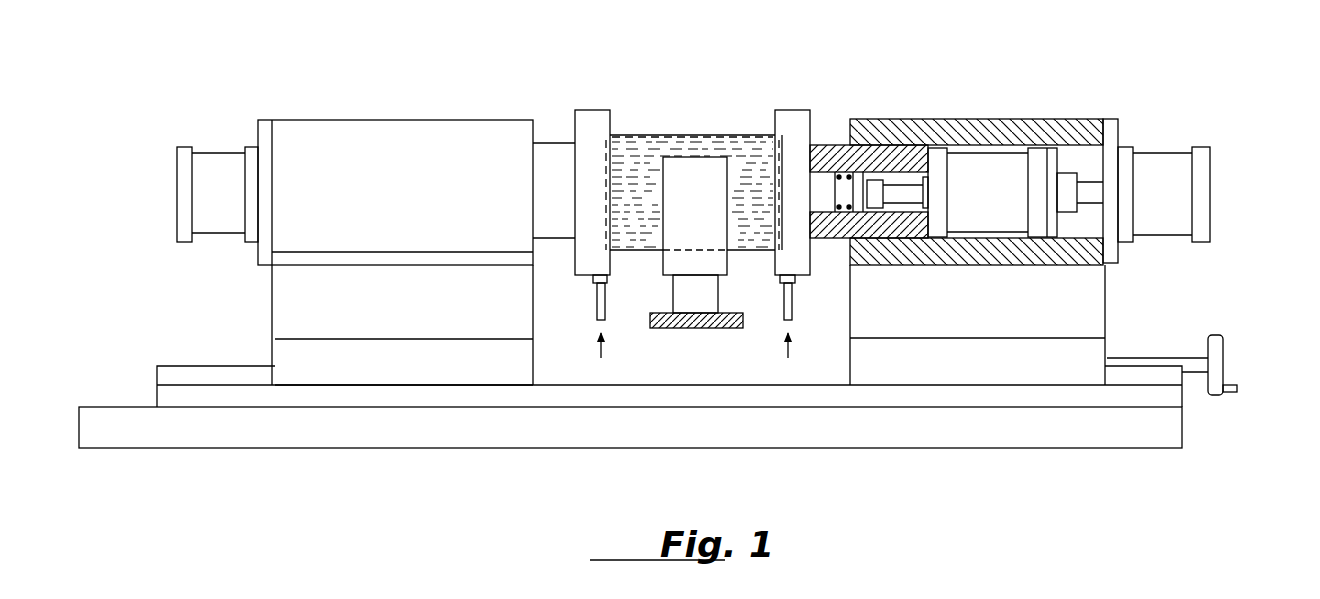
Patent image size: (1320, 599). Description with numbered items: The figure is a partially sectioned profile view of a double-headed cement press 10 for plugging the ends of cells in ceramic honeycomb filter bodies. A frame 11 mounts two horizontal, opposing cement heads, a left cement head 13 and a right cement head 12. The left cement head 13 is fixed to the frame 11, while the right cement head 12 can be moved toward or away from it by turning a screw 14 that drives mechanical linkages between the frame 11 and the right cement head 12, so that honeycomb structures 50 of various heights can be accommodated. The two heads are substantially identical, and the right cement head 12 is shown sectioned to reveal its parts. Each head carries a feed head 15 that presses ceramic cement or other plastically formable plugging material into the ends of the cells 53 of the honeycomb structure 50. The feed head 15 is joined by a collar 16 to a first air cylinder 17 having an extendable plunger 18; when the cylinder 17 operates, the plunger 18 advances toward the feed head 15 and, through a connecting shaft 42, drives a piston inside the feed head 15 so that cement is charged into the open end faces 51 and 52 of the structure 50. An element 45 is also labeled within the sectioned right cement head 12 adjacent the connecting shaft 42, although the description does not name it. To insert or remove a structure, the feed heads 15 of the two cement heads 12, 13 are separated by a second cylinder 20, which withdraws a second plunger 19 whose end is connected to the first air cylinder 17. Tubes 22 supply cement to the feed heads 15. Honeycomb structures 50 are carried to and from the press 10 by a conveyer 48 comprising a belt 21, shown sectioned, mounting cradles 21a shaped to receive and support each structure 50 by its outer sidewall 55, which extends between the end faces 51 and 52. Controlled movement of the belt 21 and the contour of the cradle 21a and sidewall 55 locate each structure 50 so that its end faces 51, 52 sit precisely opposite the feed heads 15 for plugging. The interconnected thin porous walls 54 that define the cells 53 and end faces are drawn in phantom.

The double-headed cement press 10 is at (110, 404).
The frame 11 is at (213, 366).
The right cement head 12 is at (1104, 118).
The left cement head 13 is at (273, 148).
The screw 14 is at (1222, 338).
The feed head 15 is at (593, 109).
The collar 16 is at (922, 155).
The first air cylinder 17 is at (988, 175).
The plunger 18 is at (898, 187).
The second plunger 19 is at (1086, 188).
The second cylinder 20 is at (1201, 155).
The belt 21 is at (703, 330).
The cradle 21a is at (663, 262).
The tube 22 is at (597, 298).
The connecting shaft 42 is at (845, 226).
The seal 45 is at (841, 175).
The conveyer 48 is at (655, 333).
The honeycomb structure 50 is at (701, 132).
The first end face 51 is at (790, 138).
The second end face 52 is at (604, 157).
The cells 53 is at (657, 150).
The thin porous walls 54 is at (777, 148).
The sidewall 55 is at (628, 135).